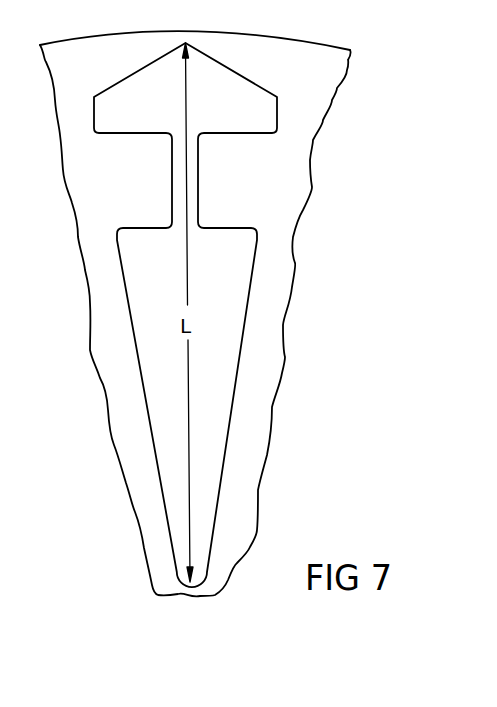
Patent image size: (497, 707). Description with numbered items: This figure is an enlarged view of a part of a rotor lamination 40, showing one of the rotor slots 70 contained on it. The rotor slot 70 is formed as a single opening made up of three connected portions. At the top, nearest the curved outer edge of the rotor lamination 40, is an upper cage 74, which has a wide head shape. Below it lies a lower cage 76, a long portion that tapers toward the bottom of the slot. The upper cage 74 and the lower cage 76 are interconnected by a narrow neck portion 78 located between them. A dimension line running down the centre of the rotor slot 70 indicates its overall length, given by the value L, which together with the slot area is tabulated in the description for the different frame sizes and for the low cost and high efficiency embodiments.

The rotor lamination 40 is at (77, 169).
The rotor slot 70 is at (127, 72).
The upper cage 74 is at (158, 68).
The lower cage 76 is at (163, 432).
The neck portion 78 is at (178, 182).